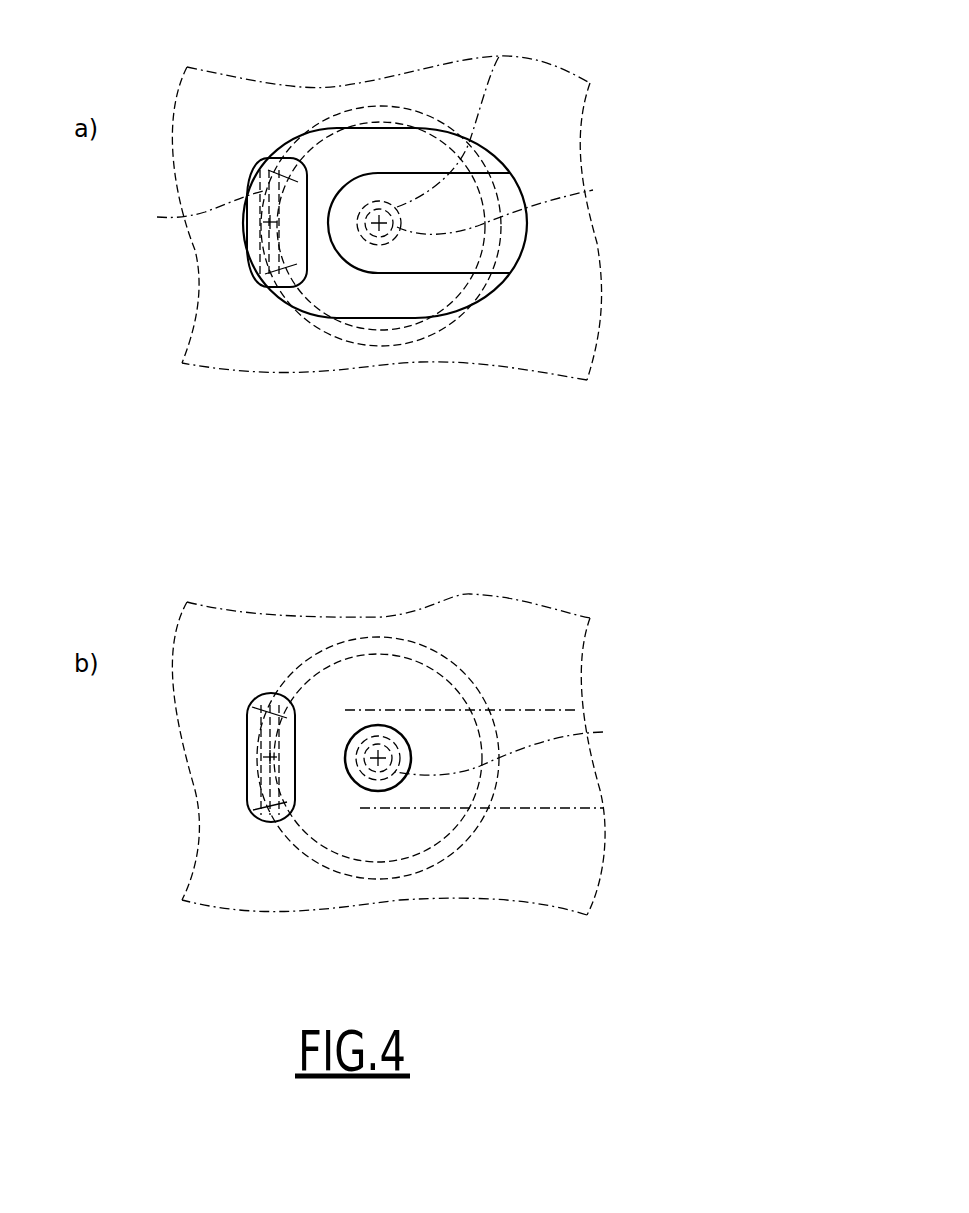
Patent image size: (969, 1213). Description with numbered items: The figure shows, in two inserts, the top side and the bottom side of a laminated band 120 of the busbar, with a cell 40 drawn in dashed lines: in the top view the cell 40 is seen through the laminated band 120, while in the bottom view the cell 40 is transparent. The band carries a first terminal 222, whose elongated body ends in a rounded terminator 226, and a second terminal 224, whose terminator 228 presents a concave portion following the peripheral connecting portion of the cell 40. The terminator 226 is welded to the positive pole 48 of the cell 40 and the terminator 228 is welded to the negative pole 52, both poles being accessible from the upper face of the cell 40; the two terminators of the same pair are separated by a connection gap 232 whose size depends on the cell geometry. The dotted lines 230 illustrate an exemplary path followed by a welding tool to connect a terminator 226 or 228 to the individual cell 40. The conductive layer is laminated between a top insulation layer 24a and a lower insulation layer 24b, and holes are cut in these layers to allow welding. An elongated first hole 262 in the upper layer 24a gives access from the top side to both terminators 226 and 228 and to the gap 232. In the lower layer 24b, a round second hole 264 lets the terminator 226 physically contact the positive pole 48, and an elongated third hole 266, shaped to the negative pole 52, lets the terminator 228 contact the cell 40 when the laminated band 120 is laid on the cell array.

The laminated band 120 is at (217, 338).
The first terminal 222 is at (440, 258).
The second terminal 224 is at (257, 253).
The terminator 226 is at (347, 233).
The terminator 228 is at (302, 288).
The dotted lines 230 is at (162, 822).
The connection gap 232 is at (320, 233).
The first hole 262 is at (337, 127).
The second hole 264 is at (353, 787).
The third hole 266 is at (288, 153).
The cell 40 is at (410, 143).
The positive pole 48 is at (500, 55).
The negative pole 52 is at (373, 107).
The insulation layer 24a is at (557, 330).
The insulation layer 24b is at (500, 287).